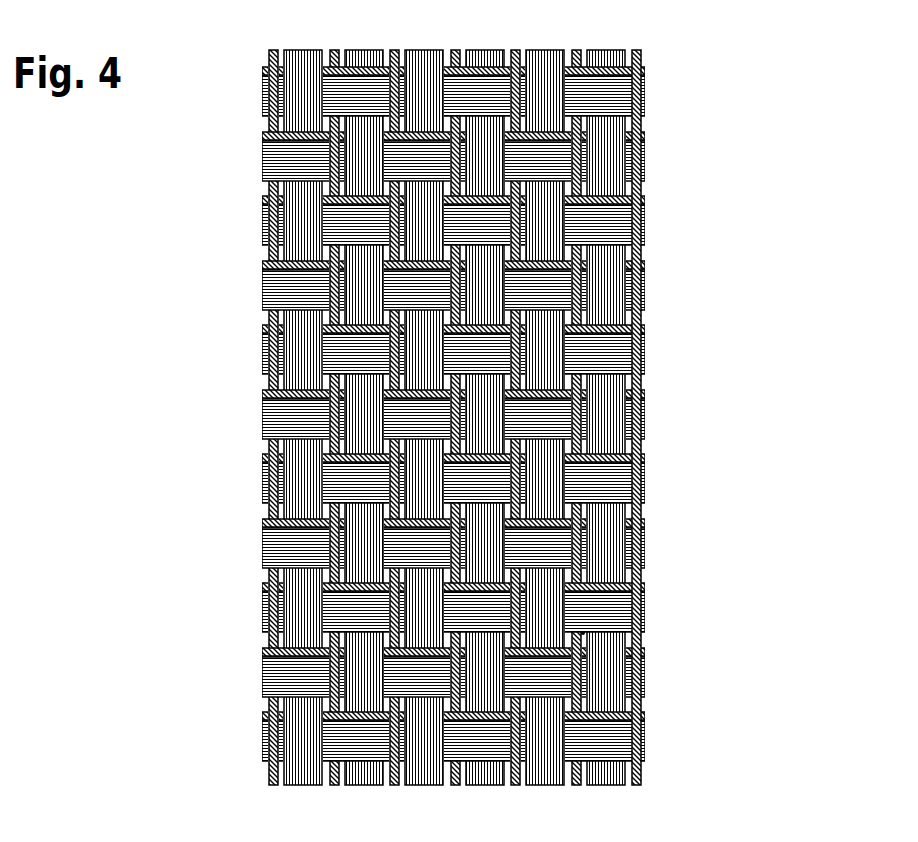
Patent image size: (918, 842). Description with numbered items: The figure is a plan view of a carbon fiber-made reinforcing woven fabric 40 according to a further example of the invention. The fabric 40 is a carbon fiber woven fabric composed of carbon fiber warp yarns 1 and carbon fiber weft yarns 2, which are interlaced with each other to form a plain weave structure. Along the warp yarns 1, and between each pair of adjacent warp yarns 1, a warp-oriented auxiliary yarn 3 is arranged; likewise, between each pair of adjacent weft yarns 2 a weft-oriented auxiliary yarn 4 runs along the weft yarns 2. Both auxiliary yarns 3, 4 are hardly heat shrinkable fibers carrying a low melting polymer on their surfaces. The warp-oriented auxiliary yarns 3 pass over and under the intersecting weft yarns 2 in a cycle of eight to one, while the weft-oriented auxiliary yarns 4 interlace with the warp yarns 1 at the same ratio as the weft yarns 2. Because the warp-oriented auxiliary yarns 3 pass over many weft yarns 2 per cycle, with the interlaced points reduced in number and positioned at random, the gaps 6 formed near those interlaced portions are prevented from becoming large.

The carbon fiber warp yarns 1 is at (612, 142).
The carbon fiber weft yarns 2 is at (595, 208).
The warp-oriented auxiliary yarns 3 is at (637, 382).
The weft-oriented auxiliary yarns 4 is at (610, 580).
The gaps 6 is at (583, 633).
The carbon fiber-made reinforcing woven fabric 40 is at (249, 581).